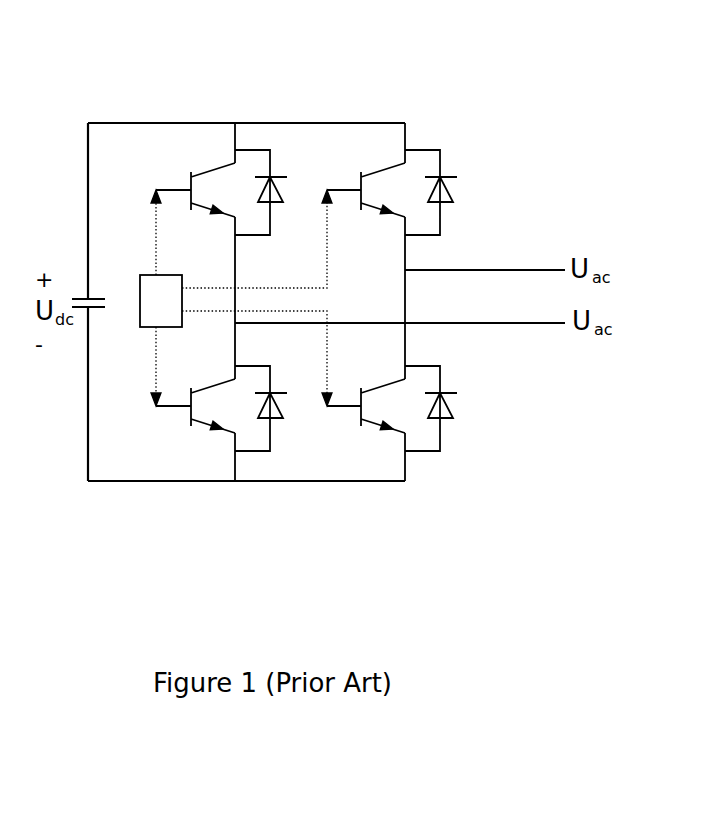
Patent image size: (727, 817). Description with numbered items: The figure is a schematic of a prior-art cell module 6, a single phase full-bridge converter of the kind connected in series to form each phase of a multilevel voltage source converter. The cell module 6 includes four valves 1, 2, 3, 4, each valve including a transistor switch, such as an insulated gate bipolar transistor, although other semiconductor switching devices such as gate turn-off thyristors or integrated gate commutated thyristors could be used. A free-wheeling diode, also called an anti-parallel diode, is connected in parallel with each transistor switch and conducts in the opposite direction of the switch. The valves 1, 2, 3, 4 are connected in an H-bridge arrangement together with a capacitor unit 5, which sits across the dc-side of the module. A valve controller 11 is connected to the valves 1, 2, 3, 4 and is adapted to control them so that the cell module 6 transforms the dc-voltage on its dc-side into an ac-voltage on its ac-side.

The valve 1 is at (237, 200).
The valve 2 is at (402, 178).
The valve 3 is at (232, 407).
The valve 4 is at (410, 408).
The capacitor unit 5 is at (97, 310).
The cell module 6 is at (249, 107).
The valve controller 11 is at (144, 273).